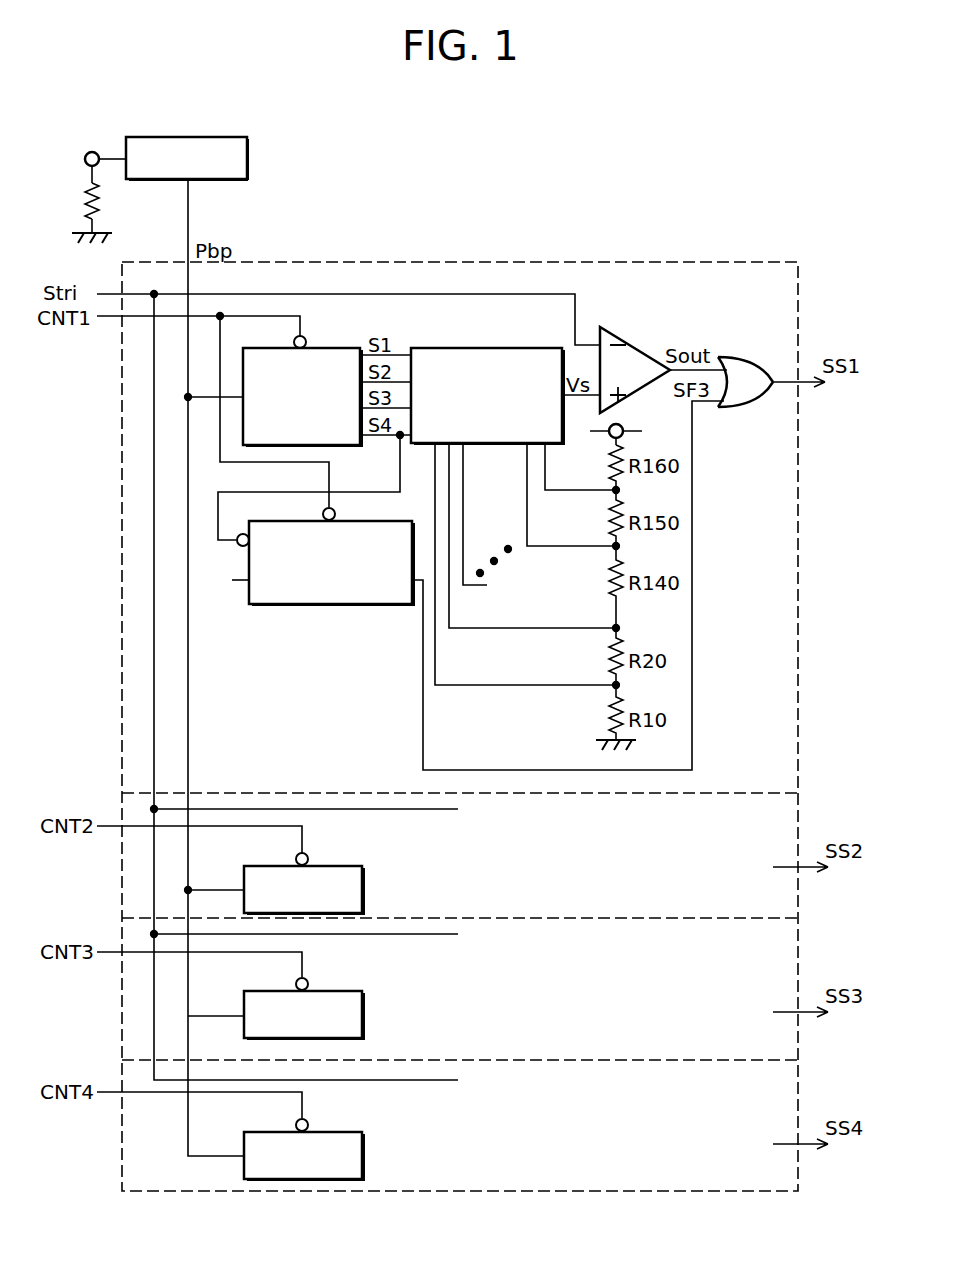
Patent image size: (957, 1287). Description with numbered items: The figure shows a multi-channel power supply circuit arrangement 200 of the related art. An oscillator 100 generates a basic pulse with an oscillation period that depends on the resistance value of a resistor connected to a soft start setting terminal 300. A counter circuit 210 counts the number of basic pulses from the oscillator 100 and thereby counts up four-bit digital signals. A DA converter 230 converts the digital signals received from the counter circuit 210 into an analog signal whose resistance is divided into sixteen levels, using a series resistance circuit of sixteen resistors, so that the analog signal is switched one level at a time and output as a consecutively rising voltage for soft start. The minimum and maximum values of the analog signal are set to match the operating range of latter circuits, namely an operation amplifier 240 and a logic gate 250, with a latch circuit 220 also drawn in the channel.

The oscillator 100 is at (218, 136).
The PWM signal generating device 200 is at (524, 262).
The counter circuit 210 is at (332, 347).
The latch circuit 220 is at (323, 606).
The DA converter 230 is at (497, 347).
The operation amplifier 240 is at (640, 343).
The logic gate 250 is at (742, 366).
The soft start setting terminal 300 is at (100, 151).